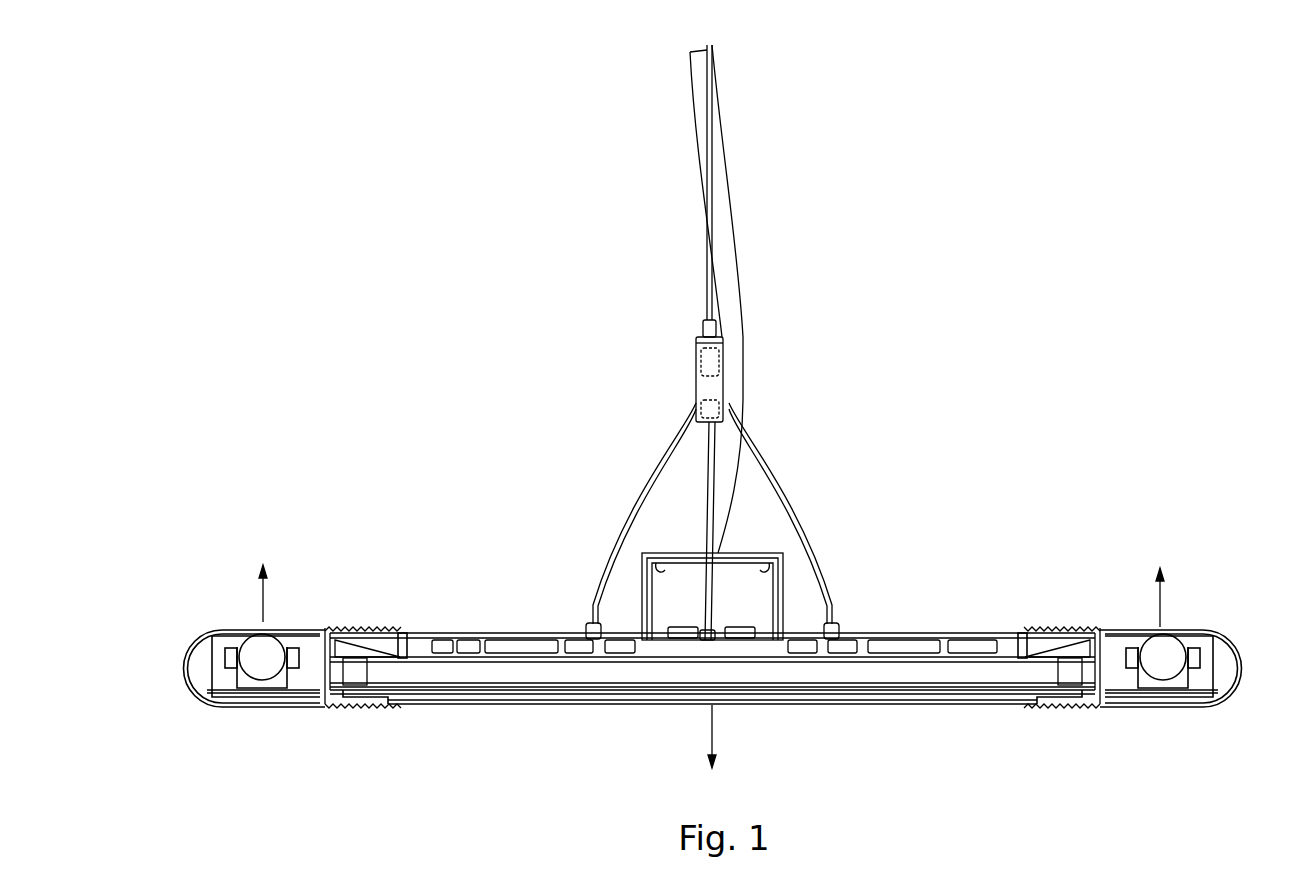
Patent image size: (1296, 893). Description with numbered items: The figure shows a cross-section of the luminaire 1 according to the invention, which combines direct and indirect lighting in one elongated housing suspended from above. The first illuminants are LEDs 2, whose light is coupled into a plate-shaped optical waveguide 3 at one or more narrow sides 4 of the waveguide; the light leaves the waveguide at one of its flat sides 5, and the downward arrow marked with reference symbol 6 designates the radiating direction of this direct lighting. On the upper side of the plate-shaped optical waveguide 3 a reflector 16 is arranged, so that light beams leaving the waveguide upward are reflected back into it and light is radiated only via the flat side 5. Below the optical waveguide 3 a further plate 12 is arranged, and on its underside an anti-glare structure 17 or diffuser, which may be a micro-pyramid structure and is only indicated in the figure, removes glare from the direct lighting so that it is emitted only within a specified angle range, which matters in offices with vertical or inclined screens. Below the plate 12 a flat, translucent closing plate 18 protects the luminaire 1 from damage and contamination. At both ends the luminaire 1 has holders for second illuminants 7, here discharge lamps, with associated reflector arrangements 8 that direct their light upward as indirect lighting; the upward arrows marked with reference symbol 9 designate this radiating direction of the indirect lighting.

The luminaire 1 is at (1000, 556).
The LEDs 2 is at (355, 690).
The plate-shaped optical waveguide 3 is at (929, 668).
The narrow sides 4 is at (374, 707).
The flat side 5 is at (880, 689).
The radiating direction for direct lighting 6 is at (716, 722).
The second illuminants 7 is at (268, 648).
The reflector arrangements 8 is at (212, 694).
The radiating direction for indirect lighting 9 is at (262, 600).
The plate 12 is at (522, 697).
The reflector 16 is at (899, 651).
The anti-glare structure 17 is at (1012, 697).
The closing plate 18 is at (625, 703).